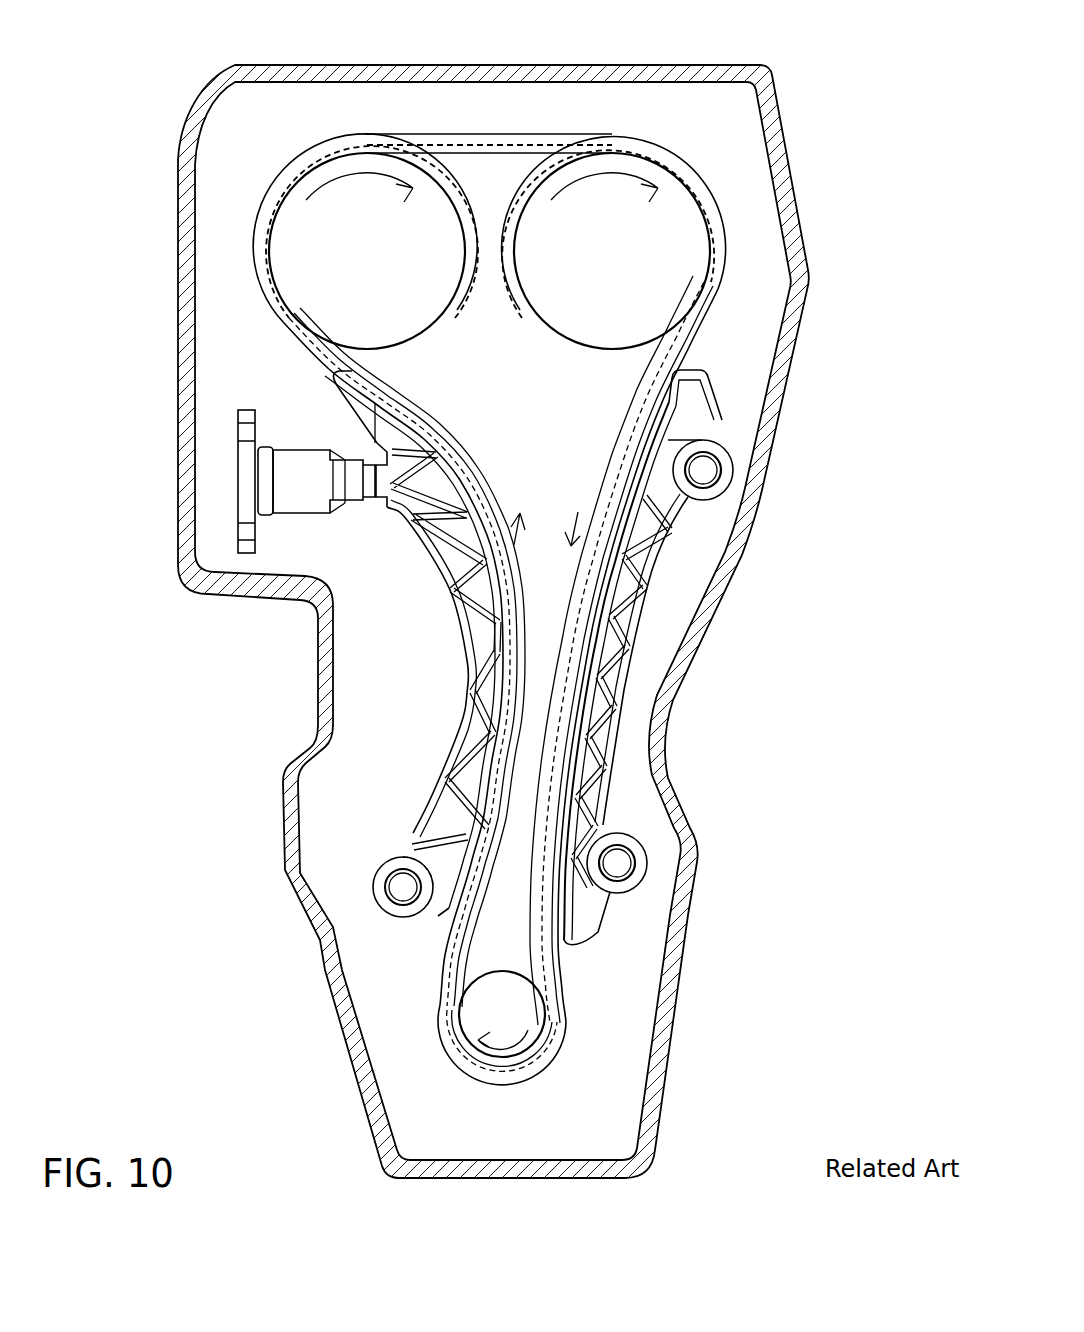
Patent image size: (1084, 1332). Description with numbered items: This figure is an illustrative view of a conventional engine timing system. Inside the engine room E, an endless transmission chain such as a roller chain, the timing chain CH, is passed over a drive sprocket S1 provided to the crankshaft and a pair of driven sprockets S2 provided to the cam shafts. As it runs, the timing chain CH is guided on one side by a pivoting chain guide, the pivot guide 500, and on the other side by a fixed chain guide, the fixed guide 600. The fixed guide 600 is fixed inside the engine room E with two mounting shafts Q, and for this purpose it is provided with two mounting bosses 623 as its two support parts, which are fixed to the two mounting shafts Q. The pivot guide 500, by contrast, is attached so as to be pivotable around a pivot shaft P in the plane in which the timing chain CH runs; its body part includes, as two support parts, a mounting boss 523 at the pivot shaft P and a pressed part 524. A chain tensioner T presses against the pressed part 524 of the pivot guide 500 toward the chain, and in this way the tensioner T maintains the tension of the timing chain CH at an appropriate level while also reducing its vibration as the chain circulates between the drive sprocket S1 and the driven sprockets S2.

The timing chain CH is at (492, 133).
The driven sprocket S2 is at (300, 232).
The drive sprocket S1 is at (540, 1027).
The chain tensioner T is at (300, 462).
The pressed part 524 is at (362, 484).
The pivot guide 500 is at (445, 590).
The mounting boss 523 is at (393, 862).
The pivot shaft P is at (400, 887).
The fixed guide 600 is at (658, 618).
The mounting boss 623 is at (716, 488).
The mounting shaft Q is at (706, 470).
The engine room E is at (318, 930).